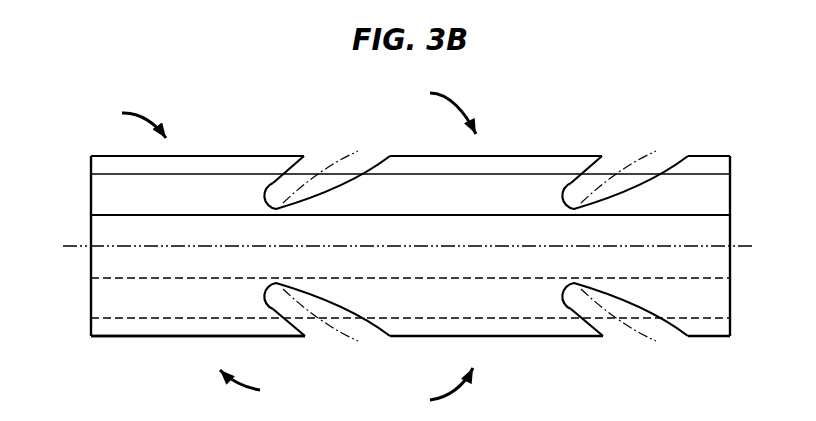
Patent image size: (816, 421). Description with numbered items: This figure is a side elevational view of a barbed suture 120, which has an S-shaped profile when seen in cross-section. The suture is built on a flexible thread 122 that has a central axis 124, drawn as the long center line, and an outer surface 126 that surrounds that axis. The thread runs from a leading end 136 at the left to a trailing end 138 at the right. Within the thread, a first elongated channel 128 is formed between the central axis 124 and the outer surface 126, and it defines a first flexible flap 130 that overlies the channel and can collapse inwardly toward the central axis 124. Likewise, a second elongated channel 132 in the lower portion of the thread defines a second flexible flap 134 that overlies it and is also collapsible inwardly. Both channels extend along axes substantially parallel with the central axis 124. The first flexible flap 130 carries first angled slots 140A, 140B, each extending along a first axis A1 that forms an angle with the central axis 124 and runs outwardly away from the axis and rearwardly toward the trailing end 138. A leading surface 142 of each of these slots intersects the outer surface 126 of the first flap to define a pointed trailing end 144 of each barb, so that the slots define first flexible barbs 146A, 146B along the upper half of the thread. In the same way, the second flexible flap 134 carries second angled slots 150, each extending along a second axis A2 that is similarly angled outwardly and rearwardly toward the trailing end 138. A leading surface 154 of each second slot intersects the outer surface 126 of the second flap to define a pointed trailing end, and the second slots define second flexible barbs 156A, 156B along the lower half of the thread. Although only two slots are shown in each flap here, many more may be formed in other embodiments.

The barbed suture 120 is at (236, 100).
The flexible thread 122 is at (707, 215).
The central axis 124 is at (104, 247).
The outer surface 126 is at (520, 157).
The first elongated channel 128 is at (103, 200).
The first flexible flap 130 is at (233, 167).
The second elongated channel 132 is at (104, 300).
The second flexible flap 134 is at (152, 328).
The leading end 136 is at (91, 163).
The trailing end 138 is at (730, 165).
The first angled slot 140A is at (370, 155).
The first angled slot 140B is at (668, 155).
The leading surface 142 is at (603, 336).
The pointed trailing end 144 is at (304, 156).
The first flexible barb 146A is at (122, 119).
The first flexible barb 146B is at (431, 108).
The second angled slot 150 is at (370, 337).
The leading surface 154 is at (305, 336).
The second flexible barb 156A is at (263, 388).
The second flexible barb 156B is at (431, 392).
The first axis A1 is at (291, 199).
The second axis A2 is at (291, 293).